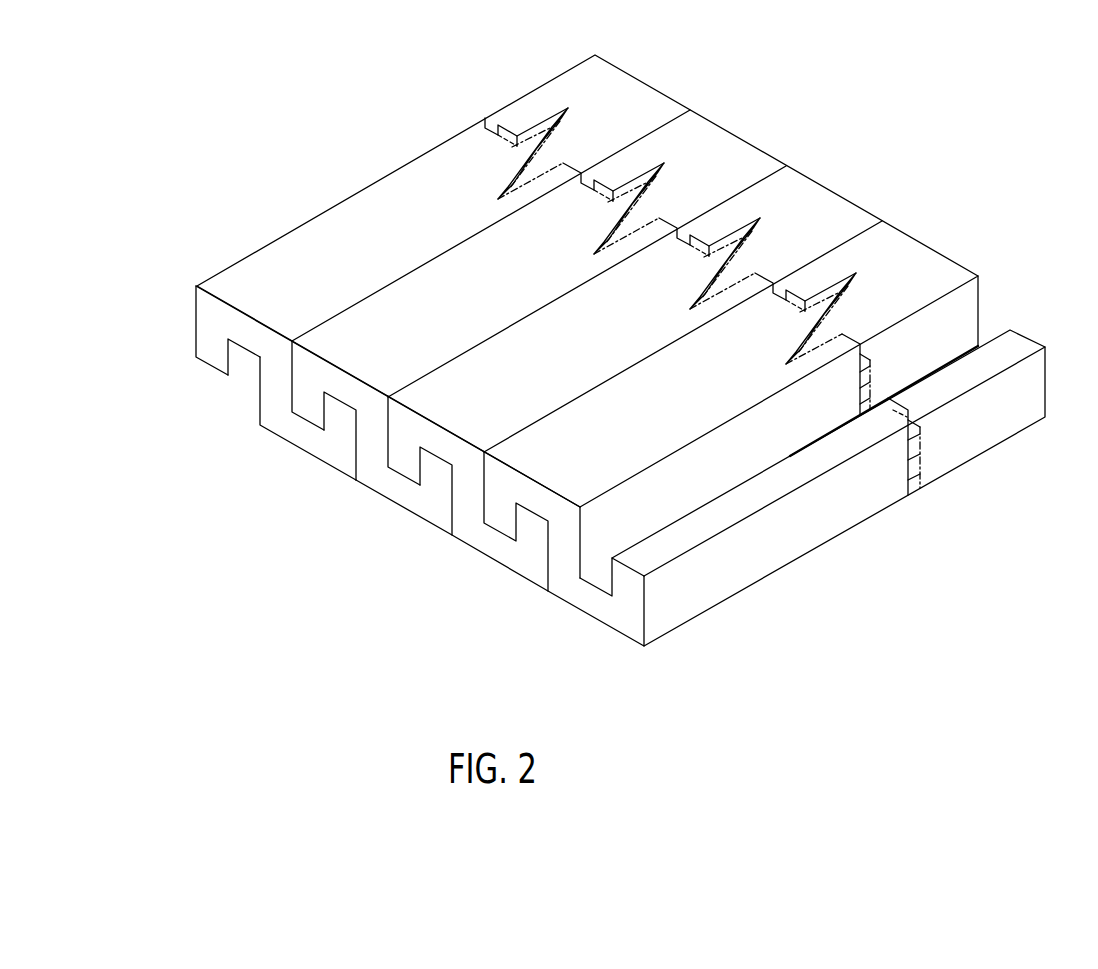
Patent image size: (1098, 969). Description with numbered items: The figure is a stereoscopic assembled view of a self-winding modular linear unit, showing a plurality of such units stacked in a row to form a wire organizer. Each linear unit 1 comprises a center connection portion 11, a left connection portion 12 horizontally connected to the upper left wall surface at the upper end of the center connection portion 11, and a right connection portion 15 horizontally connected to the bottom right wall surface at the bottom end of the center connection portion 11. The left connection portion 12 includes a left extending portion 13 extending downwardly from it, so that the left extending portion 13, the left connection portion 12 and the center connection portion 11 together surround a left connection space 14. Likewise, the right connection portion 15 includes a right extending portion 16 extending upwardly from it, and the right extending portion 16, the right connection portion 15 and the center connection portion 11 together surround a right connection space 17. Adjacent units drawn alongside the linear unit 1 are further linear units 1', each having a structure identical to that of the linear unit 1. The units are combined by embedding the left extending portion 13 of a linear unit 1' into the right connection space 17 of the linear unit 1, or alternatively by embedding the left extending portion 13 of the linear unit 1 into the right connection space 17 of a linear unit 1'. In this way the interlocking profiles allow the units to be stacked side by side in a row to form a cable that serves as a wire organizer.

The linear unit 1 is at (621, 345).
The linear unit 1' is at (615, 260).
The center connection portion 11 is at (277, 411).
The left connection portion 12 is at (247, 338).
The left extending portion 13 is at (216, 354).
The left connection space 14 is at (250, 377).
The right connection portion 15 is at (298, 430).
The right extending portion 16 is at (338, 415).
The right connection space 17 is at (602, 550).